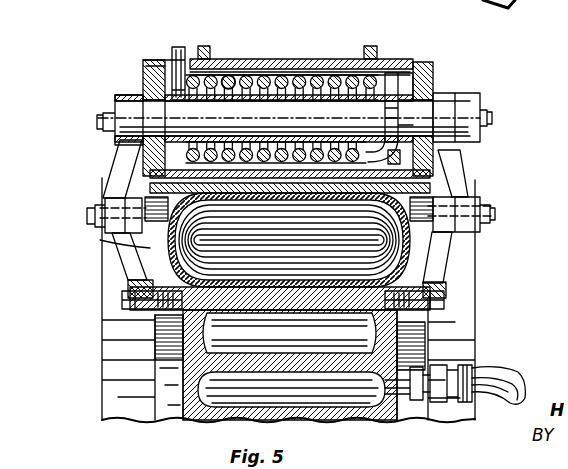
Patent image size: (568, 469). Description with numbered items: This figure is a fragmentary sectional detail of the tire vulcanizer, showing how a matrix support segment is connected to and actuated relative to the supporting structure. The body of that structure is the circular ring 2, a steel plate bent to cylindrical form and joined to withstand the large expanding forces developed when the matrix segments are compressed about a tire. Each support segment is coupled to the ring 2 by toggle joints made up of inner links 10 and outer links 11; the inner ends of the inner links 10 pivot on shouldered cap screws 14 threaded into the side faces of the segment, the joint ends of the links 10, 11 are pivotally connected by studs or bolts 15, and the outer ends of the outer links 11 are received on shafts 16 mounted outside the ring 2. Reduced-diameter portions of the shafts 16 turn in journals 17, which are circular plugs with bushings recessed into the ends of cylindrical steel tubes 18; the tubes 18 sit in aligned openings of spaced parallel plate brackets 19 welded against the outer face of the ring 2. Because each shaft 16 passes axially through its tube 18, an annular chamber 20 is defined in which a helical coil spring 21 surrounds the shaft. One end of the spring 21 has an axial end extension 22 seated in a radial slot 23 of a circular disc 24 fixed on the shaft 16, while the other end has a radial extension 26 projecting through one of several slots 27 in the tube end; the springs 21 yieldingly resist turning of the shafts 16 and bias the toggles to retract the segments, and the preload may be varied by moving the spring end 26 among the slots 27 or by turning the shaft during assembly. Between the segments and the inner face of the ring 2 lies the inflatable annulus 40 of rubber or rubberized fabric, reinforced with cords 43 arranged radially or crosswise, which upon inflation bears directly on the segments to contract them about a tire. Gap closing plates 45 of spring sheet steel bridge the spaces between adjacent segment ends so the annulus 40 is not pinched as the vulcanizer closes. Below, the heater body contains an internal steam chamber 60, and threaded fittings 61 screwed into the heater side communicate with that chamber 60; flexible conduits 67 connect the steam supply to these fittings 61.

The circular ring 2 is at (140, 182).
The inner links 10 is at (140, 284).
The outer links 11 is at (104, 172).
The shouldered cap screws 14 is at (128, 306).
The studs or bolts 15 is at (88, 218).
The shafts 16 is at (482, 116).
The journals 17 is at (143, 78).
The cylindrical steel tubes 18 is at (254, 62).
The plate brackets 19 is at (204, 45).
The annular chambers 20 is at (305, 70).
The helical coil springs 21 is at (228, 78).
The axial end extension 22 is at (438, 160).
The radial slot 23 is at (436, 170).
The circular disc 24 is at (392, 75).
The radial extension 26 is at (168, 60).
The slots 27 is at (155, 60).
The inflatable annulus 40 is at (170, 238).
The cords 43 is at (238, 321).
The gap closing plates 45 is at (178, 266).
The steam chamber 60 is at (306, 404).
The threaded fittings 61 is at (428, 368).
The flexible conduits 67 is at (518, 378).